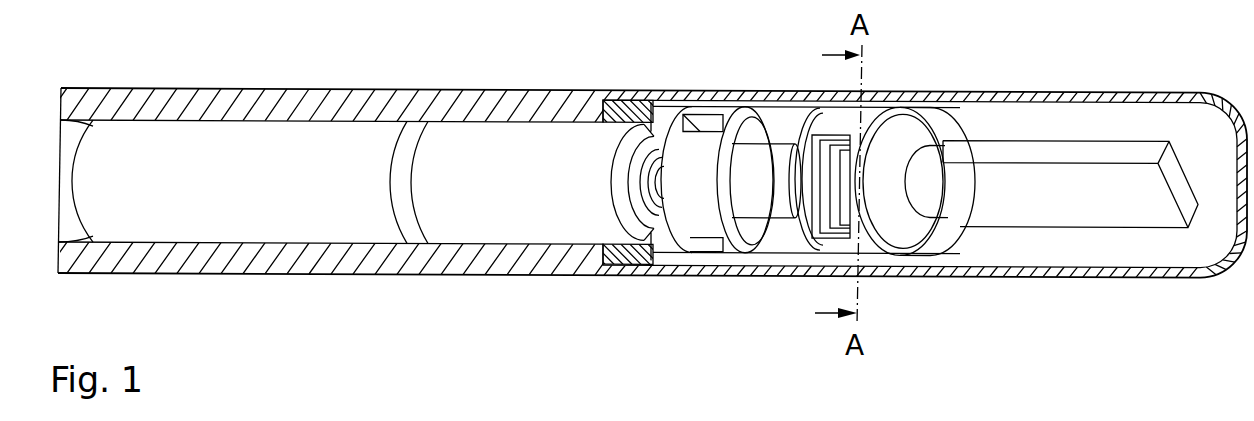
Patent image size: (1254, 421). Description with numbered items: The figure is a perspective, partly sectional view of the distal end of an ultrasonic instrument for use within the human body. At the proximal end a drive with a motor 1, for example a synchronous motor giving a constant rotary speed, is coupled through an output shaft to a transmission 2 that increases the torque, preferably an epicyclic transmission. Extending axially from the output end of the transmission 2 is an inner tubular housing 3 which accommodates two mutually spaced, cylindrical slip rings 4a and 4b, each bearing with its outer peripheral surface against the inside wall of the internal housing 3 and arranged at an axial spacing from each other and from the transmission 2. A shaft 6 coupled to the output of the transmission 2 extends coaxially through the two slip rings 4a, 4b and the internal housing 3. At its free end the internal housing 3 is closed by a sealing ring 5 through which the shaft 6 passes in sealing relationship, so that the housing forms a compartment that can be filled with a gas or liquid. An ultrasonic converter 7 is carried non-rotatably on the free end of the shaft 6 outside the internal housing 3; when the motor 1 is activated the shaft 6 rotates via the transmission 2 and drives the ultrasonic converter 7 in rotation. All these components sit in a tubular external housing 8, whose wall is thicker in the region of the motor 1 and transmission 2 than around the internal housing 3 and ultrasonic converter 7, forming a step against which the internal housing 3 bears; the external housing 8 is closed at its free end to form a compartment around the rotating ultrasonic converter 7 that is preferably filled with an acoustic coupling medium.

The motor 1 is at (297, 207).
The transmission 2 is at (549, 187).
The inner tubular housing 3 is at (630, 100).
The slip ring 4a is at (695, 207).
The slip ring 4b is at (888, 108).
The sealing ring 5 is at (912, 233).
The shaft 6 is at (743, 178).
The ultrasonic converter 7 is at (1052, 150).
The external housing 8 is at (222, 100).